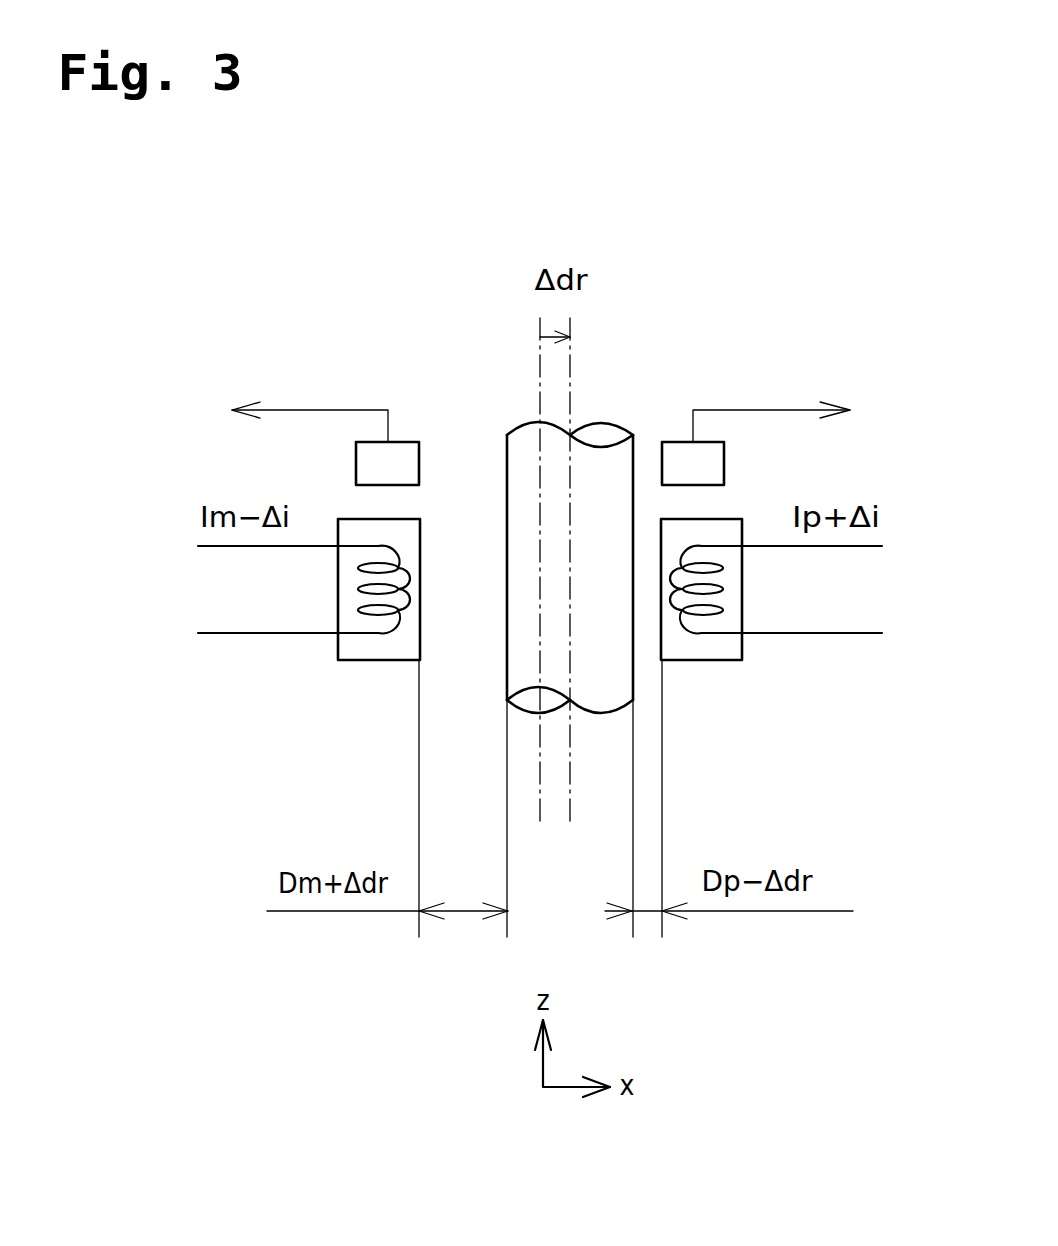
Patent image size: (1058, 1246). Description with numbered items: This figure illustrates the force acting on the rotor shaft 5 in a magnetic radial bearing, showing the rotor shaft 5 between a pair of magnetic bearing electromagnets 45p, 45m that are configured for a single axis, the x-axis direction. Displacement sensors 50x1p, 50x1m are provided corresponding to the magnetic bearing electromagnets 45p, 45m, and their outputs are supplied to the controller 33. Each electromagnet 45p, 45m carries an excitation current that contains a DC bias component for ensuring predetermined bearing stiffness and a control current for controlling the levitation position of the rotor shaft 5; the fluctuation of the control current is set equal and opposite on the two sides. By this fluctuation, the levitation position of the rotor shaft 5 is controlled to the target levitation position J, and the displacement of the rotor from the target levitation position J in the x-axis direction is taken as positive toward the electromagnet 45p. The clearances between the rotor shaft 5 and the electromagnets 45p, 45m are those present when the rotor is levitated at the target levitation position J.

The rotor shaft 5 is at (598, 465).
The controller 33 is at (535, 414).
The displacement sensor 50x1m is at (407, 441).
The displacement sensor 50x1p is at (677, 441).
The magnetic bearing electromagnet 45m is at (385, 661).
The magnetic bearing electromagnet 45p is at (692, 661).
The target levitation position J is at (538, 403).